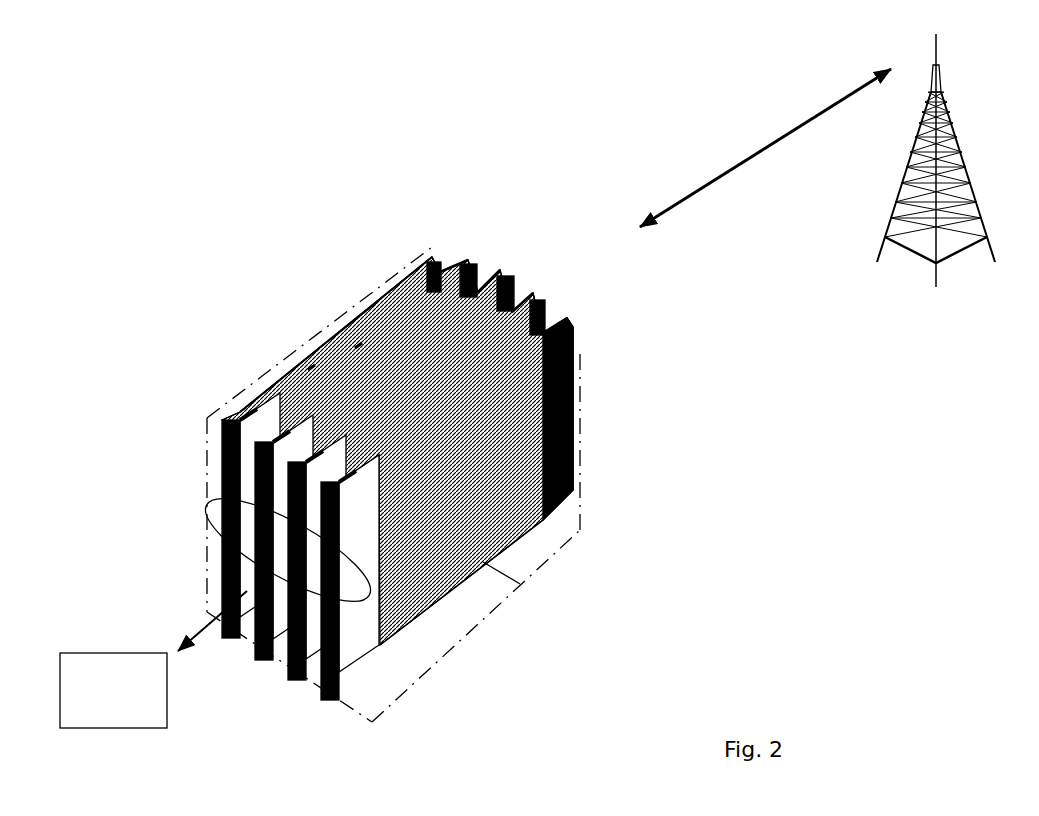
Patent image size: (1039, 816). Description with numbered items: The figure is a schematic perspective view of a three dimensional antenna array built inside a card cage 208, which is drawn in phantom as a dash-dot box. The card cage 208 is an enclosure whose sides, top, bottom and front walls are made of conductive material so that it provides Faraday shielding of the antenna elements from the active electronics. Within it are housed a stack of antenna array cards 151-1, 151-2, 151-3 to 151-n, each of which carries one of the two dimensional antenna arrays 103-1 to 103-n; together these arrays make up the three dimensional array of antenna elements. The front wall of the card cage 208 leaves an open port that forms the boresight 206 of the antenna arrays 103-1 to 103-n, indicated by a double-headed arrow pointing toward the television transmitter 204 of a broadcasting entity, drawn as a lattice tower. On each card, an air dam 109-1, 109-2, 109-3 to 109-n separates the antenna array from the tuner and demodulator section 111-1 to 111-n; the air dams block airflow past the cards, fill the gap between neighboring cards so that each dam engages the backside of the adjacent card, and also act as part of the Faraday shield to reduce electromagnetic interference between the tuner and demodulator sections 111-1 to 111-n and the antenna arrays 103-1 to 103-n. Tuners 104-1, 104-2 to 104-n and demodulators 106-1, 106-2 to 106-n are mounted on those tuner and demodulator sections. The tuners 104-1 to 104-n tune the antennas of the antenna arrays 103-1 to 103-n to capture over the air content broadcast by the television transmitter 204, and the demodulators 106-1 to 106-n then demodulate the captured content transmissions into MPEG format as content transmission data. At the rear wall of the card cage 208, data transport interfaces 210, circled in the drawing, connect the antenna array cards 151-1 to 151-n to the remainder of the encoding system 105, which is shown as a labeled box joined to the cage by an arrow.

The television transmitter 204 is at (885, 237).
The boresight 206 is at (710, 182).
The card cage 208 is at (190, 238).
The data transport interfaces 210 is at (212, 500).
The encoding system 105 is at (113, 690).
The two dimensional antenna array 103-1 is at (442, 252).
The two dimensional antenna array 103-n is at (590, 396).
The tuner 104-1 is at (395, 272).
The tuner 104-2 is at (347, 330).
The tuner 104-n is at (310, 365).
The demodulator 106-1 is at (410, 282).
The demodulator 106-2 is at (355, 348).
The demodulator 106-n is at (308, 370).
The air dam 109-1 is at (425, 256).
The air dam 109-2 is at (470, 272).
The air dam 109-3 is at (500, 302).
The air dam 109-n is at (540, 330).
The antenna array card 151-1 is at (463, 262).
The antenna array card 151-2 is at (503, 272).
The antenna array card 151-3 is at (533, 300).
The antenna array card 151-n is at (567, 322).
The tuner and demodulator section 111-1 is at (365, 312).
The tuner and demodulator section 111-n is at (520, 584).